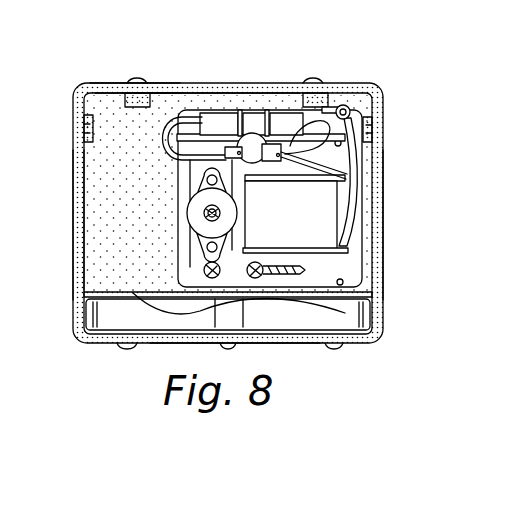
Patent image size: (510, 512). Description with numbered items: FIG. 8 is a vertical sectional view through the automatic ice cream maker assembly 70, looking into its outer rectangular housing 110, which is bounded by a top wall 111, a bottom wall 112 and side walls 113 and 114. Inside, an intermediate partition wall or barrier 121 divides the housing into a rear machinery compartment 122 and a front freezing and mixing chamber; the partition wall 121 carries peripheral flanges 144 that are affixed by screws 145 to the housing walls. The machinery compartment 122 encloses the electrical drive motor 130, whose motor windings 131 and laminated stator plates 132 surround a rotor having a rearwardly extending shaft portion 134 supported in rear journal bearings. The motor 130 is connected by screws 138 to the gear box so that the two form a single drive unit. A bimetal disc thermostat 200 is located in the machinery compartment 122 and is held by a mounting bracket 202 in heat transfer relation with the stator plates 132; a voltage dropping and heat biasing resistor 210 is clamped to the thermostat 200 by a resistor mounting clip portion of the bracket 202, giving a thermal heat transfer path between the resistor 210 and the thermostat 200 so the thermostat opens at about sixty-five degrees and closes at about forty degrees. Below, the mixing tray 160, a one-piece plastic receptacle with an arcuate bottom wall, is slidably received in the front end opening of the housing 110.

The automatic ice cream maker assembly 70 is at (75, 75).
The outer rectangular housing 110 is at (165, 84).
The top wall 111 is at (105, 82).
The bottom wall 112 is at (290, 344).
The side wall 113 is at (382, 250).
The side wall 114 is at (73, 263).
The intermediate partition wall 121 is at (113, 195).
The rear machinery compartment 122 is at (100, 217).
The electrical drive motor 130 is at (188, 222).
The motor windings 131 is at (326, 203).
The motor stator 132 is at (330, 105).
The rearwardly extending shaft portion 134 is at (217, 213).
The screws 138 is at (204, 270).
The peripheral flanges 144 is at (170, 98).
The screws 145 is at (147, 80).
The mixing tray 160 is at (160, 326).
The thermostat 200 is at (273, 140).
The mounting bracket 202 is at (260, 120).
The voltage dropping and heat biasing resistor 210 is at (210, 120).